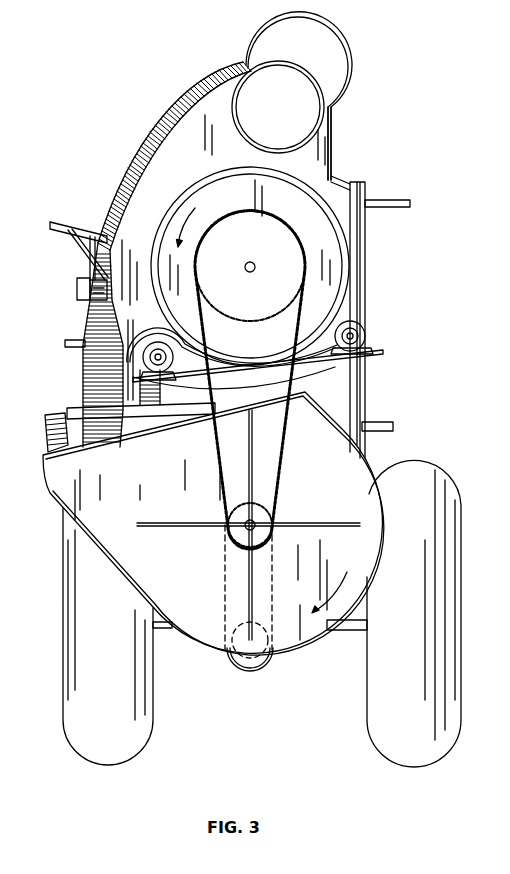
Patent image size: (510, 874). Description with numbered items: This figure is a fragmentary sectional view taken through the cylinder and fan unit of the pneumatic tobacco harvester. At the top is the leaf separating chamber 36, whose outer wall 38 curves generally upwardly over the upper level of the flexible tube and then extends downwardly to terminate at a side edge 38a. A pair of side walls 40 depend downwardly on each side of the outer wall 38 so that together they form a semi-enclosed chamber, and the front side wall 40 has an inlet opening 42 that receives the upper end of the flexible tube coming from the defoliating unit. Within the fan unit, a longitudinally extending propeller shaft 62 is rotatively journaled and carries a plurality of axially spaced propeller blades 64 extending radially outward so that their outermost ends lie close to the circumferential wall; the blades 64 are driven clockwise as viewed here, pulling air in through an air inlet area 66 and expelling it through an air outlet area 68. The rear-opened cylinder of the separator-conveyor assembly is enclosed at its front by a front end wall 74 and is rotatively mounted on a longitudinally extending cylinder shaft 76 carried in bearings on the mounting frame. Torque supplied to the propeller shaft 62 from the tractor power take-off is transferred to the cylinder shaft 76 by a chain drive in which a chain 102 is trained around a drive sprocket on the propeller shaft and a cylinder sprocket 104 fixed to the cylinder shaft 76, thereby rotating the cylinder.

The leaf separating chamber 36 is at (309, 54).
The outer wall 38 is at (273, 53).
The side edge 38a is at (333, 178).
The side wall 40 is at (222, 100).
The inlet opening 42 is at (318, 110).
The propeller shaft 62 is at (257, 524).
The propeller blade 64 is at (253, 468).
The air inlet area 66 is at (208, 425).
The air outlet area 68 is at (102, 452).
The front end wall 74 is at (329, 238).
The cylinder shaft 76 is at (255, 268).
The chain 102 is at (212, 338).
The cylinder sprocket 104 is at (268, 234).